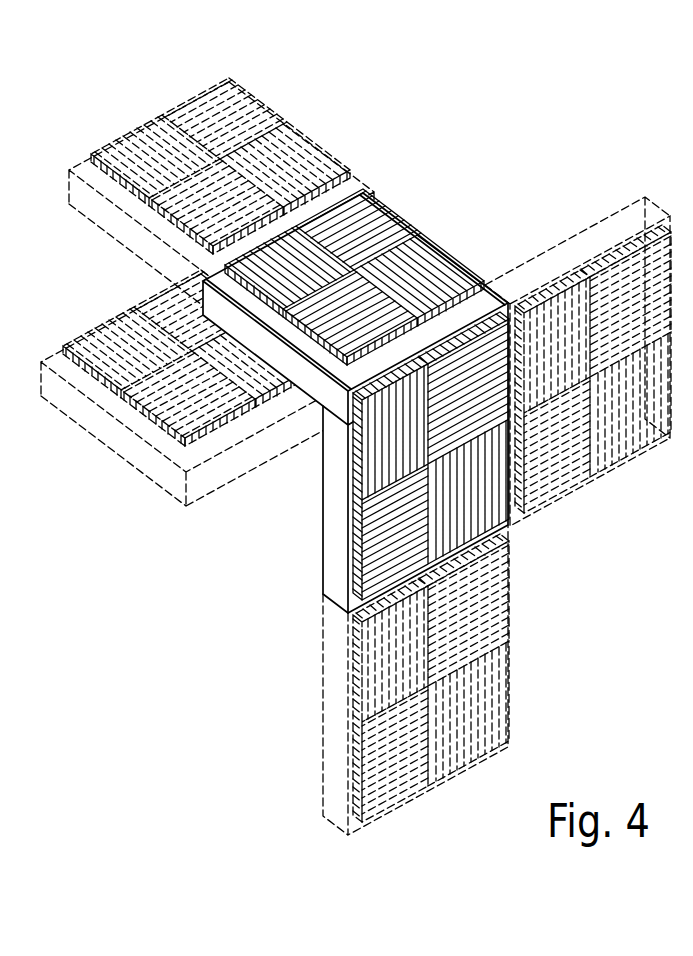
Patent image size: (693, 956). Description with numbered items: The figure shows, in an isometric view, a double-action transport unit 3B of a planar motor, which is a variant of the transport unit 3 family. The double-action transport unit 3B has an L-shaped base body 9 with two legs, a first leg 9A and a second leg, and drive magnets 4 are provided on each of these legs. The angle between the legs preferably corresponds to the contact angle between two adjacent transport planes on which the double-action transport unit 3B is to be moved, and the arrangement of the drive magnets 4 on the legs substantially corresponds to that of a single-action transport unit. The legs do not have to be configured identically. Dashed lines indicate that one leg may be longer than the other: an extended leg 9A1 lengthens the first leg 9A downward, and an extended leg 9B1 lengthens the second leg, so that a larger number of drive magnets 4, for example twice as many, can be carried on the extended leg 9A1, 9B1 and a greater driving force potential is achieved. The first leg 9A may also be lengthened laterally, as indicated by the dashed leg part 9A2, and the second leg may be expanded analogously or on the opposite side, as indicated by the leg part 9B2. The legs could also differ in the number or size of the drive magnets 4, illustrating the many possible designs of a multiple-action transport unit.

The double-action transport unit 3B is at (354, 449).
The panel assembly 3 is at (1, 696).
The L-shaped base body 9 is at (345, 402).
The first leg 9A is at (330, 585).
The extended leg 9A1 is at (340, 723).
The leg part 9A2 is at (570, 258).
The extended leg 9B1 is at (82, 200).
The leg part 9B2 is at (148, 463).
The drive magnets 4 is at (300, 177).